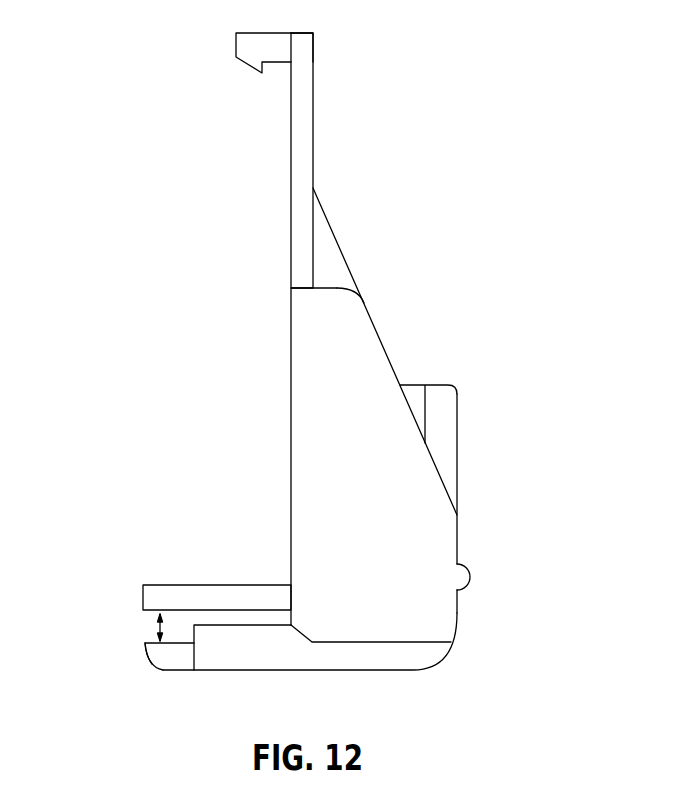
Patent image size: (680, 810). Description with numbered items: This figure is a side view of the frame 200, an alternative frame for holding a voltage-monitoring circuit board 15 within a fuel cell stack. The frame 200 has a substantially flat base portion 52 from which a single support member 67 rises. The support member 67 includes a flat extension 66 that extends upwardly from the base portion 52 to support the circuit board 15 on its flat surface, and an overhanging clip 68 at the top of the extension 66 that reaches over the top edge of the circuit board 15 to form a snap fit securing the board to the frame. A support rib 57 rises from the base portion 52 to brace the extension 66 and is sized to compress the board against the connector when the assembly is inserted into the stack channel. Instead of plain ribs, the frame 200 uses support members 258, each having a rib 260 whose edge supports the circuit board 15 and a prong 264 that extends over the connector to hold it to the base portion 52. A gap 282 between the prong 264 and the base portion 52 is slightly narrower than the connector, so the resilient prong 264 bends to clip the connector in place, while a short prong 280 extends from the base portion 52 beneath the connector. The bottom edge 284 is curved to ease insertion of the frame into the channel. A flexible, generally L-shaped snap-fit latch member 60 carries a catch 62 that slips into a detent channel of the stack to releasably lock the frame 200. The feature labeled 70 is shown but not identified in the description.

The frame 200 is at (558, 176).
The circuit board 15 is at (266, 286).
The flat extension 66 is at (300, 107).
The support member 67 is at (322, 53).
The overhanging clip 68 is at (243, 47).
The support rib 57 is at (335, 257).
The support member 258 is at (385, 317).
The snap-fit latch member 60 is at (449, 370).
The rib 260 is at (380, 508).
The catch 62 is at (470, 577).
The base portion 52 is at (395, 657).
The prong 264 is at (187, 598).
The slot 70 is at (233, 635).
The short prong 280 is at (167, 656).
The gap 282 is at (157, 627).
The bottom edge 284 is at (157, 653).